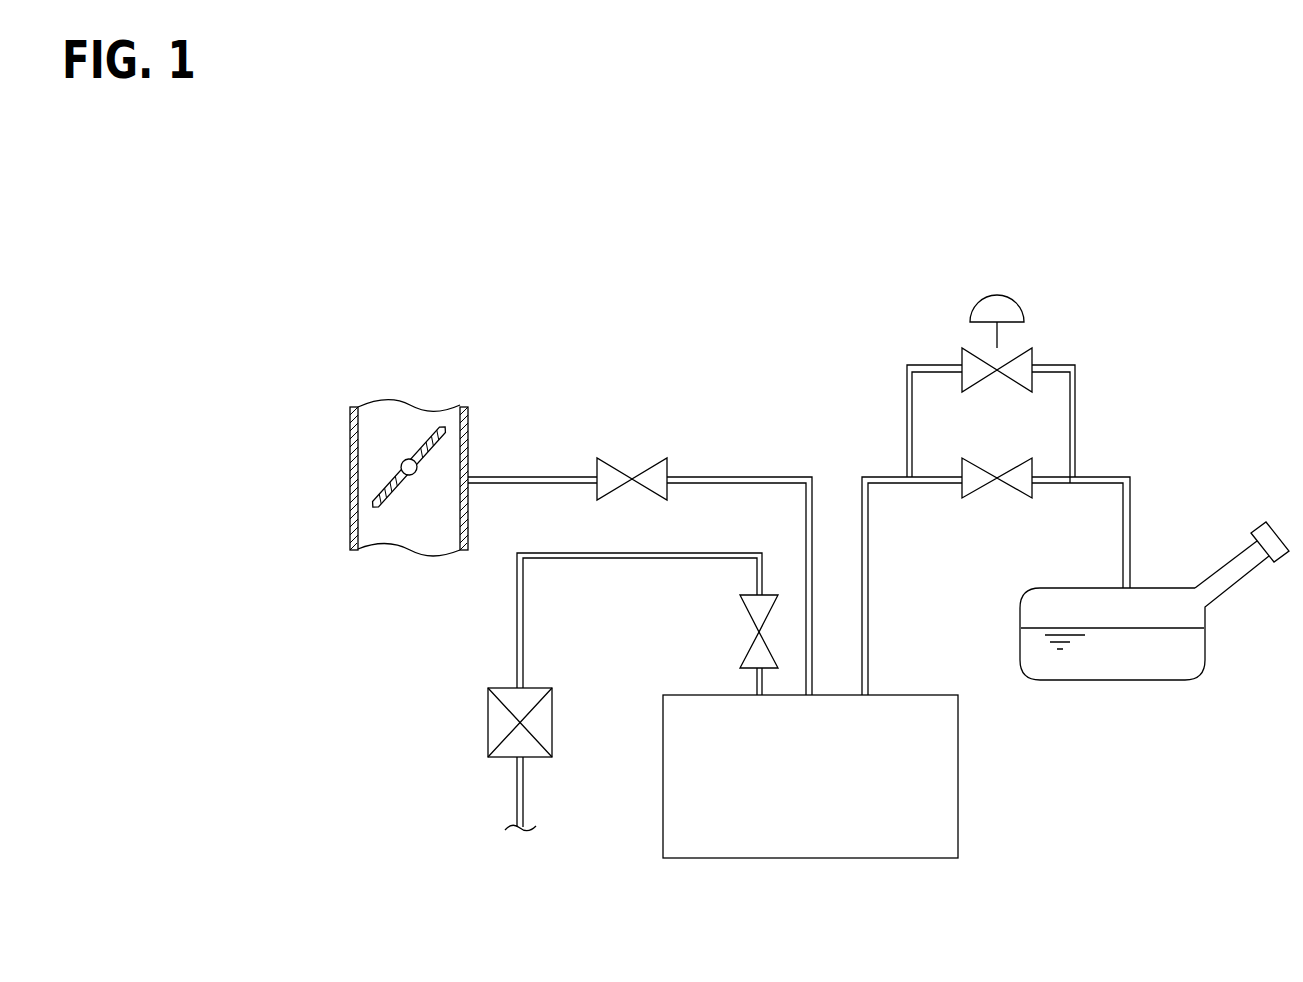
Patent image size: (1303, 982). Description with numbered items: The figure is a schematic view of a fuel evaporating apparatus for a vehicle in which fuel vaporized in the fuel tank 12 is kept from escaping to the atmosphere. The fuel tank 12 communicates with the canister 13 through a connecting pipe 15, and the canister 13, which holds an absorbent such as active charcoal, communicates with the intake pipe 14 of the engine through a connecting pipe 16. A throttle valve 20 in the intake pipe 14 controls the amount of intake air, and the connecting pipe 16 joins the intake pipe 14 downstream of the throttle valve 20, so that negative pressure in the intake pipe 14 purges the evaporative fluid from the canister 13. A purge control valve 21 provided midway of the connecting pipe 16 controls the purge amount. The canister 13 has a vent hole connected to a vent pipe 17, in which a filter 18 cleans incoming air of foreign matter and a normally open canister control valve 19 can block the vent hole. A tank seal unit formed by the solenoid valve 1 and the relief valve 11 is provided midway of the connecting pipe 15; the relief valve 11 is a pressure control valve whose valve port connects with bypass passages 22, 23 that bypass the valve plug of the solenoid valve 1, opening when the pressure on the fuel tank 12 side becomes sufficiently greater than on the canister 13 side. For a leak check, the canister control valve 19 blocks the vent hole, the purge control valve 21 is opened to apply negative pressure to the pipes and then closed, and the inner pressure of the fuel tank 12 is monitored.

The solenoid valve 1 is at (1005, 498).
The relief valve 11 is at (992, 298).
The fuel tank 12 is at (1128, 682).
The canister 13 is at (958, 800).
The intake pipe 14 is at (350, 425).
The connecting pipe 15 is at (1130, 515).
The connecting pipe 16 is at (735, 477).
The vent pipe 17 is at (632, 558).
The filter 18 is at (552, 722).
The canister control valve 19 is at (748, 647).
The throttle valve 20 is at (427, 438).
The purge control valve 21 is at (621, 468).
The bypass passage 22 is at (1075, 415).
The bypass passage 23 is at (905, 418).